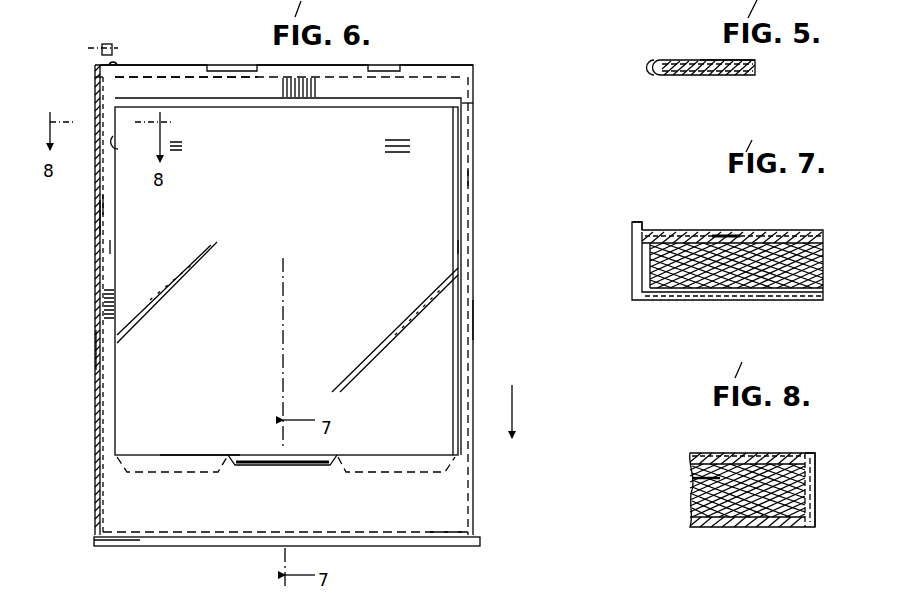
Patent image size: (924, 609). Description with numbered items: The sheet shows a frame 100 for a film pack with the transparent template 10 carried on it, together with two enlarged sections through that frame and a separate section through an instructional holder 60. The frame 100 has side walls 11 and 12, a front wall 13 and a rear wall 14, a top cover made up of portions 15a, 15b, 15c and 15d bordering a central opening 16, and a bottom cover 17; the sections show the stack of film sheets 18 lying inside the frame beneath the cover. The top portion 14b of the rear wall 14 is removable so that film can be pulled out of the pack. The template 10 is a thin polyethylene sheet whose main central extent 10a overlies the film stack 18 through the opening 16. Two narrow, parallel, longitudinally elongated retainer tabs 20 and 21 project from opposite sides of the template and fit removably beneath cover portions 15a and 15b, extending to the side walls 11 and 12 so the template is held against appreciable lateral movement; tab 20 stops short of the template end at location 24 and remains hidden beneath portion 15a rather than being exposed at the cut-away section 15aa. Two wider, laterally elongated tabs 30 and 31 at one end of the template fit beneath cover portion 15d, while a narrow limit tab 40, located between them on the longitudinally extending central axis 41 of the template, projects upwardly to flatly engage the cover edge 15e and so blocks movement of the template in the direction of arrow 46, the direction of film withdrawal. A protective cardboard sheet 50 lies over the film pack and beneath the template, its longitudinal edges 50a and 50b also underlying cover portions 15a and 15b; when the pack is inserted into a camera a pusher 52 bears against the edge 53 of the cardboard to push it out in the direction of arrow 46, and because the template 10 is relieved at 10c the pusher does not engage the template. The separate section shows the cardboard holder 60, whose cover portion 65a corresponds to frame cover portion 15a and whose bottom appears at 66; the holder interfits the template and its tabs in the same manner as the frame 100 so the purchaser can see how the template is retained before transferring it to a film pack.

In FIG. 6, the frame 100 is at (484, 82).
In FIG. 8, the frame 100 is at (735, 534).
In FIG. 6, the template 10 is at (375, 110).
In FIG. 5, the template 10 is at (746, 61).
In FIG. 7, the template 10 is at (812, 232).
In FIG. 8, the template 10 is at (694, 449).
In FIG. 6, the main central extent 10a is at (289, 206).
In FIG. 6, the relieved portion 10c is at (127, 146).
In FIG. 6, the side wall 11 is at (96, 350).
In FIG. 8, the side wall 11 is at (815, 495).
In FIG. 6, the side wall 12 is at (474, 322).
In FIG. 6, the front wall 13 is at (437, 66).
In FIG. 6, the rear wall 14 is at (368, 547).
In FIG. 7, the rear wall 14 is at (632, 285).
In FIG. 6, the top portion of rear wall 14b is at (150, 547).
In FIG. 7, the top portion of rear wall 14b is at (630, 223).
In FIG. 6, the top cover portion 15a is at (100, 216).
In FIG. 8, the top cover portion 15a is at (812, 452).
In FIG. 6, the cut-away section 15aa is at (104, 213).
In FIG. 6, the top cover portion 15b is at (469, 178).
In FIG. 6, the top cover portion 15c is at (188, 84).
In FIG. 6, the top cover portion 15d is at (295, 519).
In FIG. 7, the top cover portion 15d is at (668, 230).
In FIG. 6, the cover edge 15e is at (198, 454).
In FIG. 7, the cover edge 15e is at (735, 232).
In FIG. 6, the opening 16 is at (449, 129).
In FIG. 7, the opening 16 is at (778, 232).
In FIG. 8, the opening 16 is at (730, 455).
In FIG. 7, the bottom cover 17 is at (790, 300).
In FIG. 7, the stack of film sheets 18 is at (828, 270).
In FIG. 8, the stack of film sheets 18 is at (697, 505).
In FIG. 6, the retainer tab 20 is at (112, 247).
In FIG. 6, the retainer tab 21 is at (457, 247).
In FIG. 8, the tab termination location 24 is at (797, 455).
In FIG. 6, the lateral tab 30 is at (168, 470).
In FIG. 7, the lateral tab 30 is at (703, 300).
In FIG. 6, the lateral tab 31 is at (400, 475).
In FIG. 6, the limit tab 40 is at (330, 458).
In FIG. 7, the limit tab 40 is at (722, 235).
In FIG. 6, the central axis 41 is at (283, 285).
In FIG. 6, the arrow 46 is at (512, 412).
In FIG. 6, the protective cardboard sheet 50 is at (447, 547).
In FIG. 7, the protective cardboard sheet 50 is at (660, 300).
In FIG. 8, the protective cardboard sheet 50 is at (700, 478).
In FIG. 6, the longitudinal edge of cardboard sheet 50a is at (95, 86).
In FIG. 6, the longitudinal edge of cardboard sheet 50b is at (474, 103).
In FIG. 6, the pusher 52 is at (100, 47).
In FIG. 6, the cardboard edge 53 is at (113, 64).
In FIG. 5, the cardboard holder 60 is at (663, 80).
In FIG. 5, the holder cover portion 65a is at (658, 62).
In FIG. 5, the holder bottom 66 is at (722, 76).